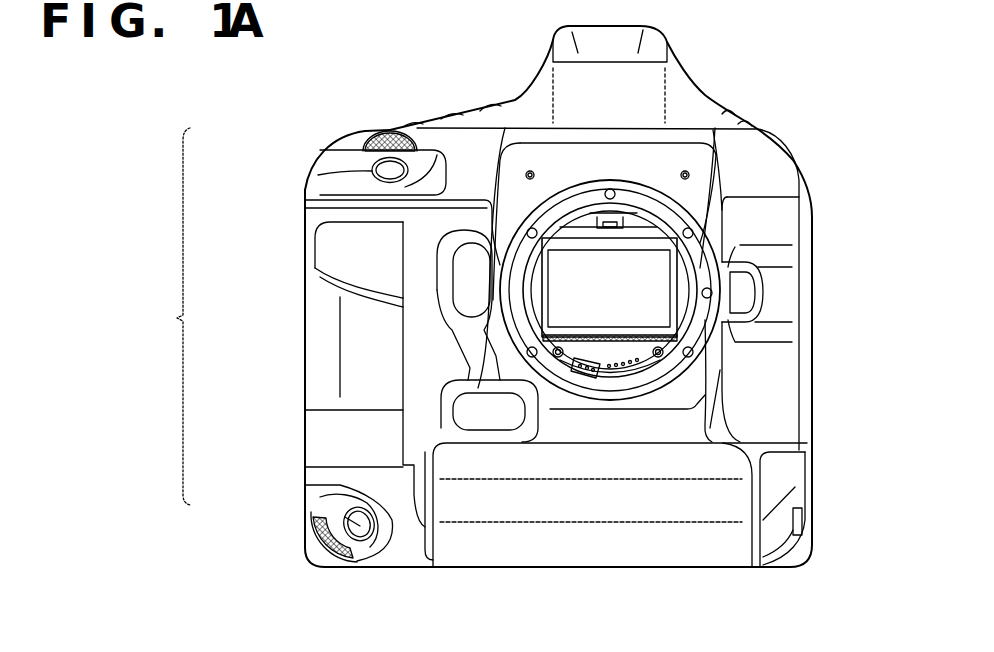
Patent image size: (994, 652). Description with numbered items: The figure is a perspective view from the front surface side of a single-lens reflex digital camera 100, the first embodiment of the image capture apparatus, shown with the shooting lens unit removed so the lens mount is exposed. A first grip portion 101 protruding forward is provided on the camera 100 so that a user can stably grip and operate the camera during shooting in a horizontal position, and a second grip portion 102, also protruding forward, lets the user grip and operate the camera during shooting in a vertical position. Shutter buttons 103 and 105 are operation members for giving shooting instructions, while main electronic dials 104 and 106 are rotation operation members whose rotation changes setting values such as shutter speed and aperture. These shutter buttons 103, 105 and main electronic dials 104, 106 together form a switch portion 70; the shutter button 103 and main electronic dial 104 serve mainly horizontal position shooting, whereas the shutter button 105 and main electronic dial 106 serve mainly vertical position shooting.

The camera 100 is at (781, 85).
The switch portion 70 is at (166, 316).
The first grip portion 101 is at (333, 383).
The second grip portion 102 is at (613, 560).
The shutter button 103 is at (380, 173).
The main electronic dial 104 is at (385, 130).
The shutter button 105 is at (350, 520).
The main electronic dial 106 is at (315, 519).